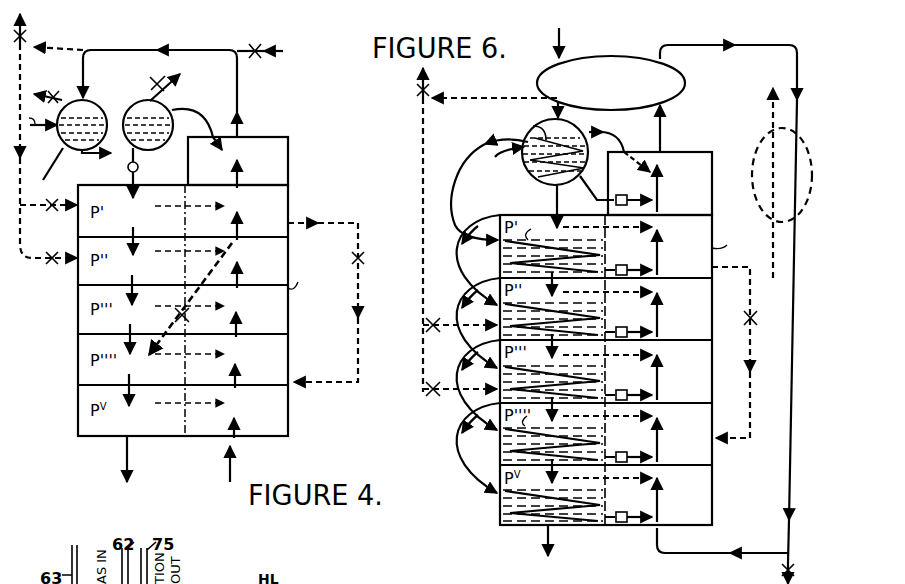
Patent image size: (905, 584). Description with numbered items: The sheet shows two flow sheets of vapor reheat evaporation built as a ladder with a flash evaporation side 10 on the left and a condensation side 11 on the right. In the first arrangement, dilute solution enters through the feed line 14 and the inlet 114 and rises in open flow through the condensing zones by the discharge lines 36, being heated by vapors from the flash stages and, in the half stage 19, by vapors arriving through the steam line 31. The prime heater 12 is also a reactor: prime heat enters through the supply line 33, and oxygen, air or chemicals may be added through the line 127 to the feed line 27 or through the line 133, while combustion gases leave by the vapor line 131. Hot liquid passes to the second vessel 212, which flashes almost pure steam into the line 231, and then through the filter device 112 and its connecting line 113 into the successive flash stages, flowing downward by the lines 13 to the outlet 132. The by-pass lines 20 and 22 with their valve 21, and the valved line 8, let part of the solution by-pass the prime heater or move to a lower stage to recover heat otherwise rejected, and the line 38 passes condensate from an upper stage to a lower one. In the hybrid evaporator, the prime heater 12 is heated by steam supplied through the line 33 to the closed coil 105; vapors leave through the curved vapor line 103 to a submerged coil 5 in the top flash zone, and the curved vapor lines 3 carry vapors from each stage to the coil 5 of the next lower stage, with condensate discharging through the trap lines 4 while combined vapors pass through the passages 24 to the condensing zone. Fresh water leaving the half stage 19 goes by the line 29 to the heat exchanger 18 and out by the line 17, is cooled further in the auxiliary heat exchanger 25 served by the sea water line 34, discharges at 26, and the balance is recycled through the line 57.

In FIG. 6, the curved vapor line 3 is at (475, 354).
In FIG. 6, the steam trap line 4 is at (623, 445).
In FIG. 6, the heat transfer coil 5 is at (532, 325).
In FIG. 4, the valved line 8 is at (190, 299).
In FIG. 4, the flash evaporation side 10 is at (78, 340).
In FIG. 6, the flash evaporation side 10 is at (501, 216).
In FIG. 4, the condensation side 11 is at (302, 284).
In FIG. 6, the condensation side 11 is at (729, 238).
In FIG. 4, the prime heater 12 is at (82, 125).
In FIG. 6, the prime heater 12 is at (527, 172).
In FIG. 4, the flash evaporating stream line 13 is at (130, 316).
In FIG. 6, the flash evaporating stream line 13 is at (543, 370).
In FIG. 6, the sea water feed line 14 is at (575, 43).
In FIG. 6, the fresh water outlet line 17 is at (777, 48).
In FIG. 6, the heat exchanger 18 is at (621, 94).
In FIG. 4, the half stage 19 is at (268, 180).
In FIG. 6, the half stage 19 is at (697, 199).
In FIG. 4, the by-pass line 20 is at (51, 95).
In FIG. 6, the by-pass line 20 is at (495, 102).
In FIG. 4, the valve 21 is at (31, 28).
In FIG. 6, the valve 21 is at (414, 92).
In FIG. 4, the by-pass line 22 is at (48, 223).
In FIG. 6, the by-pass line 22 is at (449, 354).
In FIG. 6, the vapor passage 24 is at (612, 232).
In FIG. 6, the auxiliary heat exchanger 25 is at (799, 148).
In FIG. 6, the fresh water discharge 26 is at (799, 573).
In FIG. 4, the prime heater feed line 27 is at (160, 84).
In FIG. 6, the fresh water line 29 is at (672, 128).
In FIG. 4, the steam line 31 is at (197, 125).
In FIG. 6, the steam line 31 is at (632, 143).
In FIG. 4, the prime heat supply line 33 is at (42, 131).
In FIG. 6, the prime heat supply line 33 is at (497, 162).
In FIG. 6, the sea water circulation line 34 is at (764, 183).
In FIG. 4, the fresh water stream discharge lines 36 is at (232, 276).
In FIG. 6, the fresh water stream discharge lines 36 is at (668, 380).
In FIG. 4, the condensate withdrawal line 38 is at (344, 216).
In FIG. 6, the condensate withdrawal line 38 is at (743, 352).
In FIG. 6, the condensate recycle line 57 is at (722, 540).
In FIG. 6, the curved vapor line 103 is at (489, 182).
In FIG. 6, the closed coil 105 is at (526, 126).
In FIG. 4, the filter device 112 is at (149, 173).
In FIG. 4, the connecting line 113 is at (100, 162).
In FIG. 4, the feed inlet line 114 is at (248, 464).
In FIG. 4, the oxygen or chemical supply line 127 is at (322, 56).
In FIG. 4, the vapor line 131 is at (51, 89).
In FIG. 4, the outlet 132 is at (145, 459).
In FIG. 4, the supply line 133 is at (61, 167).
In FIG. 4, the second vessel 212 is at (148, 125).
In FIG. 4, the steam line 231 is at (172, 82).